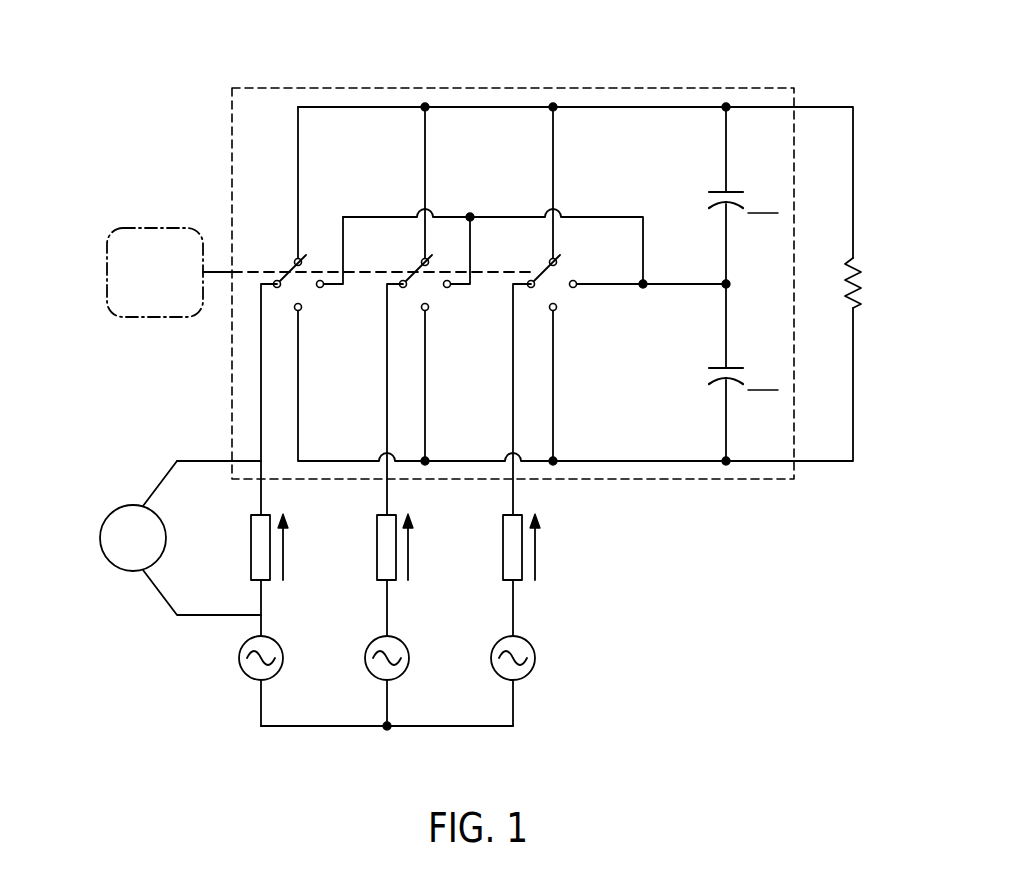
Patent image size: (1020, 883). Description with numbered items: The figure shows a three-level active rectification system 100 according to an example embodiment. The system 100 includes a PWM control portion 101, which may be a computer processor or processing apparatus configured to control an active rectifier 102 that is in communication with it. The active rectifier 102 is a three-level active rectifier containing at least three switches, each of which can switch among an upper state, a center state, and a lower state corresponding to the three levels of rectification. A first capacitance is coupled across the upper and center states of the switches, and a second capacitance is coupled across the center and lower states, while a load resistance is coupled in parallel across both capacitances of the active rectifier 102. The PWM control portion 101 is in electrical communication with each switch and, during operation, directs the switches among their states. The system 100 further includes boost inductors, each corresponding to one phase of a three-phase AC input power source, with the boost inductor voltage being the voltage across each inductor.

The three-level active rectification system 100 is at (211, 74).
The PWM control portion 101 is at (163, 228).
The active rectifier 102 is at (753, 86).